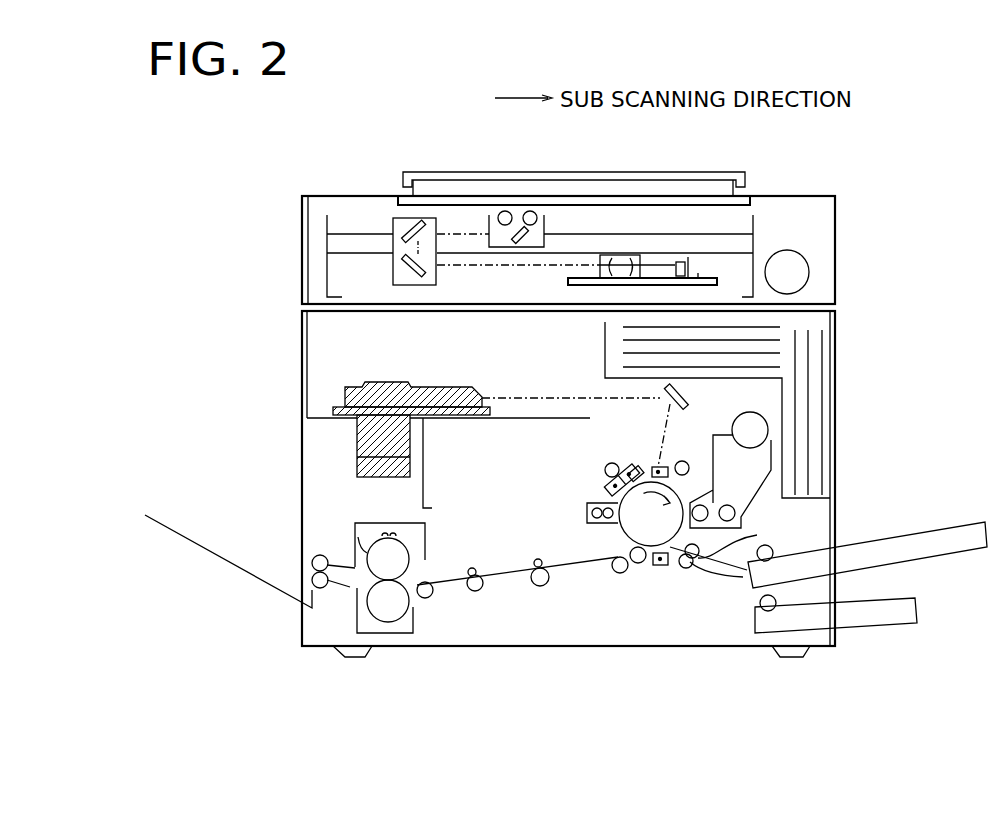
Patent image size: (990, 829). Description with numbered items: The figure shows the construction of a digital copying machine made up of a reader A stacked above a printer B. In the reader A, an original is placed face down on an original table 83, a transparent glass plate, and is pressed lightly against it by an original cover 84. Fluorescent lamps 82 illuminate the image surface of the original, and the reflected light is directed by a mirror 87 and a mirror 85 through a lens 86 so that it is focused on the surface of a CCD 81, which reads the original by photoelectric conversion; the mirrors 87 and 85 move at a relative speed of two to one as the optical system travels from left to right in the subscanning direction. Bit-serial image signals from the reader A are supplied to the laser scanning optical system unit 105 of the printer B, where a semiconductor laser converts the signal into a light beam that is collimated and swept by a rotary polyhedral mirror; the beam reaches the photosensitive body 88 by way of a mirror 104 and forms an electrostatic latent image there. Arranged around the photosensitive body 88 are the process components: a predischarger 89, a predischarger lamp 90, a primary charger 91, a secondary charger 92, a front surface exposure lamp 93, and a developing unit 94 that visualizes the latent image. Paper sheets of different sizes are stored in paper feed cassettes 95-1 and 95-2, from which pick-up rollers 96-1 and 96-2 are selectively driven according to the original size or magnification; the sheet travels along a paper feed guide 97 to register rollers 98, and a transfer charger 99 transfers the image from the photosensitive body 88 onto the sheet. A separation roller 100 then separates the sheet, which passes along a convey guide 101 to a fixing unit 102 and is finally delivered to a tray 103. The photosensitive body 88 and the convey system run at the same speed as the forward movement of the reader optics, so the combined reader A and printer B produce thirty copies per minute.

The reader A is at (817, 240).
The printer B is at (825, 403).
The CCD 81 is at (693, 262).
The fluorescent lamps 82 is at (530, 211).
The original table 83 is at (643, 197).
The original cover 84 is at (725, 172).
The mirror 85 is at (400, 227).
The lens 86 is at (618, 258).
The mirror 87 is at (523, 238).
The photosensitive body 88 is at (627, 537).
The predischarger 89 is at (608, 480).
The predischarger lamp 90 is at (606, 467).
The primary charger 91 is at (636, 466).
The secondary charger 92 is at (658, 467).
The front surface exposure lamp 93 is at (687, 461).
The developing unit 94 is at (730, 495).
The paper feed cassette 95-1 is at (810, 578).
The paper feed cassette 95-2 is at (875, 623).
The pick-up roller 96-1 is at (770, 552).
The pick-up roller 96-2 is at (768, 611).
The paper feed guide 97 is at (723, 574).
The register rollers 98 is at (687, 568).
The transfer charger 99 is at (660, 567).
The separation roller 100 is at (633, 573).
The convey guide 101 is at (560, 568).
The fixing unit 102 is at (397, 555).
The tray 103 is at (240, 565).
The mirror 104 is at (687, 397).
The laser scanning optical system unit 105 is at (465, 387).